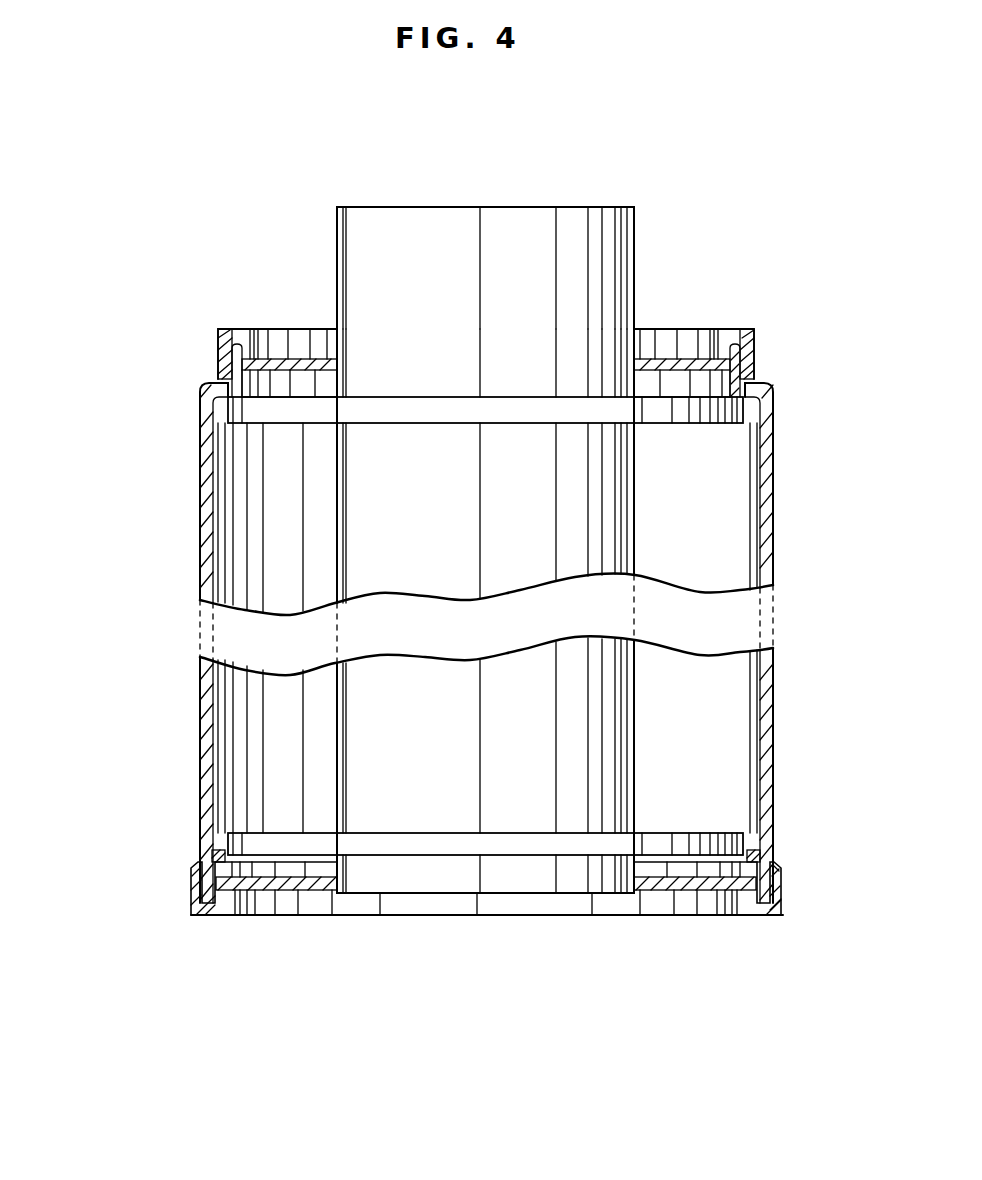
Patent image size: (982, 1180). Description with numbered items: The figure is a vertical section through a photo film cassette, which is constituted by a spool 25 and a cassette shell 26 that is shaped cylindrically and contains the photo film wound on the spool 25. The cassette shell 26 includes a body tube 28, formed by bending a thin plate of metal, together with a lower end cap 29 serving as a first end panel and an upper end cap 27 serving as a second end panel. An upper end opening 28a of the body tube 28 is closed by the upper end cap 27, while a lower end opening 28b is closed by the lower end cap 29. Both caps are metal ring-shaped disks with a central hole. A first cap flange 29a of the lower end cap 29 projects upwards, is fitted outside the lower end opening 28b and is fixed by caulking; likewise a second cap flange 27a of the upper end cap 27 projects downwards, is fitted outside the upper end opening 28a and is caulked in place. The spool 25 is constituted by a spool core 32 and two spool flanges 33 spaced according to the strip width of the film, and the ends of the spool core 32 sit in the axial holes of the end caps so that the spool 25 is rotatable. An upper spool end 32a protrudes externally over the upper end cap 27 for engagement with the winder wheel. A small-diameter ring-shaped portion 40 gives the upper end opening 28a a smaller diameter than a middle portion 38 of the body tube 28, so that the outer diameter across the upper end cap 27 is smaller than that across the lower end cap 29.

The spool 25 is at (652, 221).
The cassette shell 26 is at (790, 497).
The upper end cap 27 is at (684, 341).
The second cap flange 27a is at (755, 334).
The body tube 28 is at (92, 350).
The upper end opening 28a is at (741, 368).
The lower end opening 28b is at (757, 845).
The lower end cap 29 is at (664, 907).
The first cap flange 29a is at (783, 885).
The spool core 32 is at (360, 526).
The upper spool end 32a is at (408, 215).
The spool flanges 33 is at (688, 425).
The middle portion 38 is at (212, 432).
The small-diameter ring-shaped portion 40 is at (228, 352).